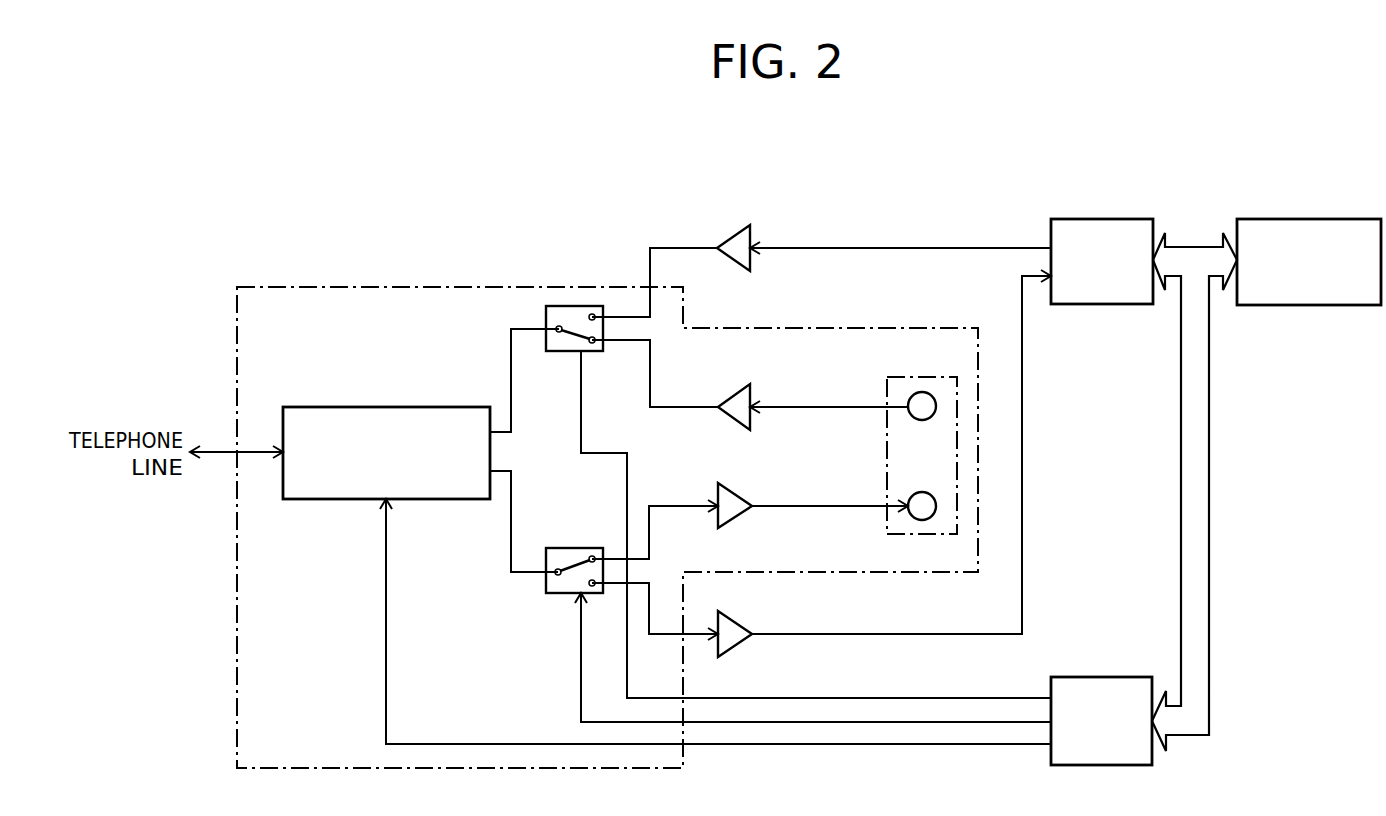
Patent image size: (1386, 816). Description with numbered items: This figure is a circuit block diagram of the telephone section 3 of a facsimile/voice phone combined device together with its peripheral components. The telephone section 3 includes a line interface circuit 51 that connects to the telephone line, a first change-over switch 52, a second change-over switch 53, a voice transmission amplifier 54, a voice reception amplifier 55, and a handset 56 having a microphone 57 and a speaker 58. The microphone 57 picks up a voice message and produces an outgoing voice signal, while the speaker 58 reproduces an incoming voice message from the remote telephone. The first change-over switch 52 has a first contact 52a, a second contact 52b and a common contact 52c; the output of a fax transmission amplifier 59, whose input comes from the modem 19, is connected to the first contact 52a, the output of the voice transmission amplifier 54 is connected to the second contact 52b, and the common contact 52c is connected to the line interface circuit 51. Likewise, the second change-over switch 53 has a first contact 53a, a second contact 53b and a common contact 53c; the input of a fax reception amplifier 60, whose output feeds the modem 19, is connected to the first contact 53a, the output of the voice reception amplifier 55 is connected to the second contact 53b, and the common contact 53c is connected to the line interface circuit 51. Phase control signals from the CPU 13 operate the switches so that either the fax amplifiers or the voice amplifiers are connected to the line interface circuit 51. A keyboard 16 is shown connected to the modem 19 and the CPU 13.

The telephone section 3 is at (404, 284).
The CPU 13 is at (1120, 674).
The keyboard 16 is at (1342, 219).
The modem 19 is at (1125, 219).
The line interface circuit 51 is at (428, 403).
The first change-over switch 52 is at (569, 324).
The first contact 52a is at (592, 312).
The second contact 52b is at (597, 345).
The common contact 52c is at (557, 325).
The second change-over switch 53 is at (547, 574).
The first contact 53a is at (588, 583).
The second contact 53b is at (592, 555).
The common contact 53c is at (558, 569).
The voice transmission amplifier 54 is at (735, 388).
The voice reception amplifier 55 is at (718, 492).
The handset 56 is at (885, 456).
The microphone 57 is at (910, 393).
The speaker 58 is at (913, 517).
The fax transmission amplifier 59 is at (738, 231).
The fax reception amplifier 60 is at (745, 618).